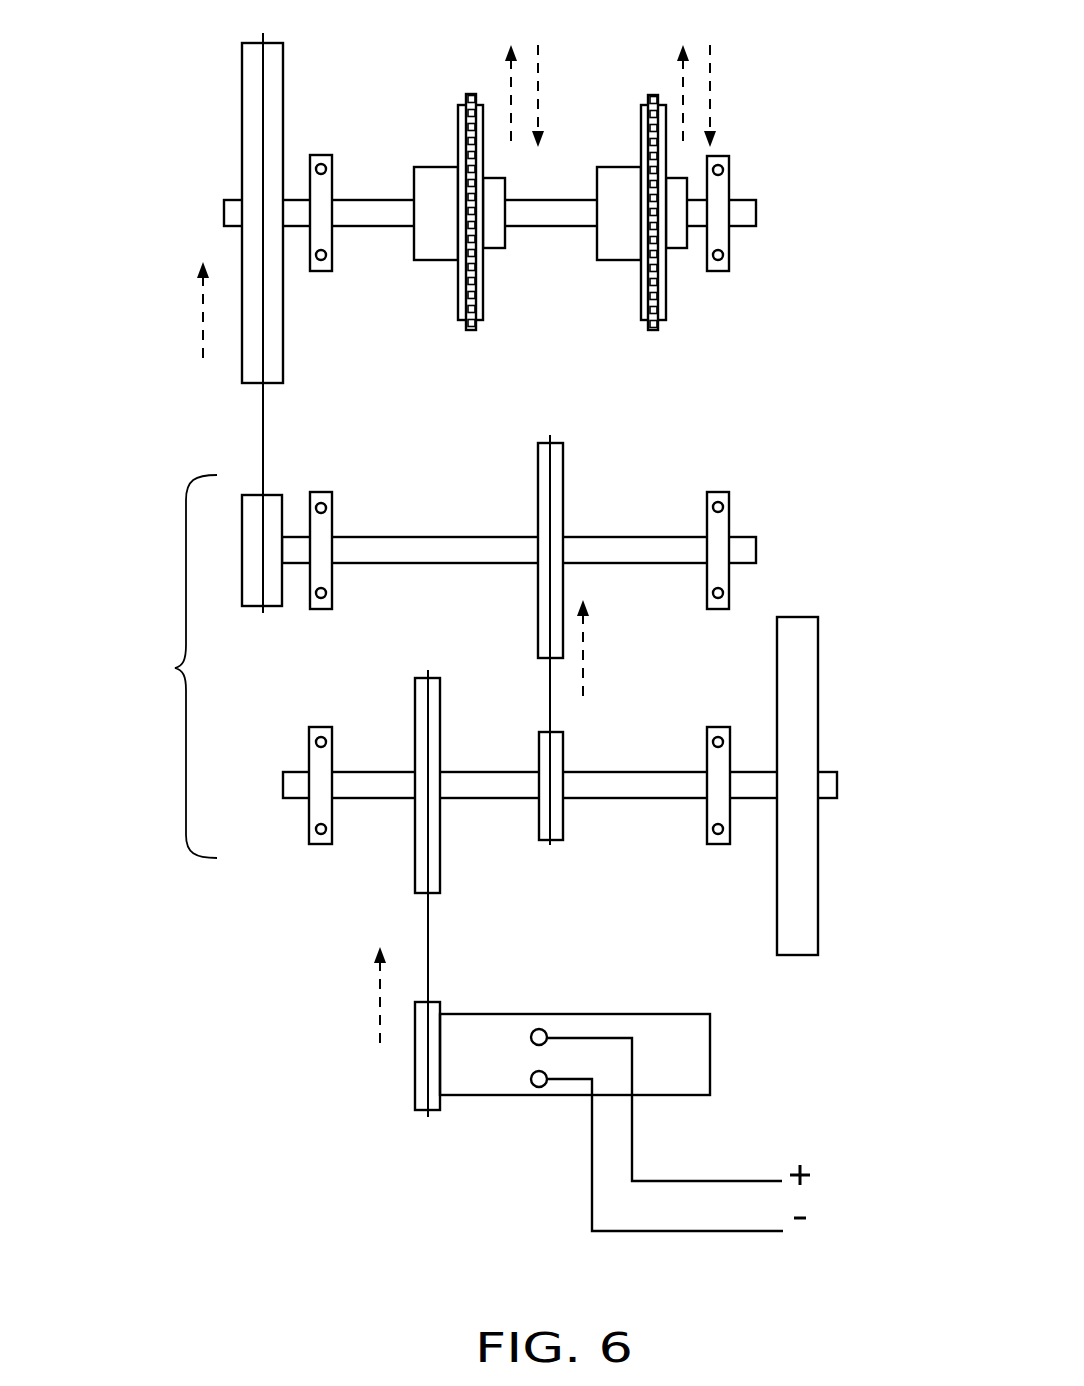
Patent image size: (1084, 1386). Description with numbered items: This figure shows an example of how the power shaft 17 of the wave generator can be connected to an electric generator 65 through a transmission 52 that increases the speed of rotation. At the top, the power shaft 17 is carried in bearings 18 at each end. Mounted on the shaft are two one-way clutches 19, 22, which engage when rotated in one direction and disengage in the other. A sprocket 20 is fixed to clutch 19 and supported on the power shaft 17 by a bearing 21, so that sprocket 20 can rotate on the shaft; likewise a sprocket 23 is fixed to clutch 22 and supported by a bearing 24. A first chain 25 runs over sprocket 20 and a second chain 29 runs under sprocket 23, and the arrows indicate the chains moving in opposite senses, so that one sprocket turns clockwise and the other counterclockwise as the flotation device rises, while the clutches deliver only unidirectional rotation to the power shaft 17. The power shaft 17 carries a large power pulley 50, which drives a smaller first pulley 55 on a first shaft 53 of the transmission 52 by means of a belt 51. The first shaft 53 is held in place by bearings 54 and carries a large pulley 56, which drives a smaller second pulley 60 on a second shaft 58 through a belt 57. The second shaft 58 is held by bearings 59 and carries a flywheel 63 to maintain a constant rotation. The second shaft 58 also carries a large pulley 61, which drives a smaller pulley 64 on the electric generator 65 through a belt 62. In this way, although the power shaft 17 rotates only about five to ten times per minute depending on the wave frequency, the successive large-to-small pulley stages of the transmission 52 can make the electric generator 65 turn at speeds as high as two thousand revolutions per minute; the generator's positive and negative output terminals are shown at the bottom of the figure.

The power shaft 17 is at (377, 207).
The bearings 18 is at (321, 157).
The one-way clutch 19 is at (432, 172).
The sprocket 20 is at (441, 193).
The bearing 21 is at (497, 242).
The one-way clutch 22 is at (617, 175).
The sprocket 23 is at (627, 193).
The bearing 24 is at (677, 242).
The first chain 25 is at (470, 332).
The second chain 29 is at (657, 325).
The power pulley 50 is at (248, 79).
The belt 51 is at (267, 420).
The transmission 52 is at (173, 668).
The first shaft 53 is at (443, 547).
The bearings 54 is at (314, 607).
The first pulley 55 is at (280, 500).
The large pulley 56 is at (558, 458).
The belt 57 is at (550, 500).
The second shaft 58 is at (496, 783).
The bearings 59 is at (330, 735).
The second pulley 60 is at (558, 750).
The large pulley 61 is at (433, 688).
The belt 62 is at (428, 933).
The flywheel 63 is at (807, 685).
The pulley 64 is at (415, 1095).
The electric generator 65 is at (647, 1022).